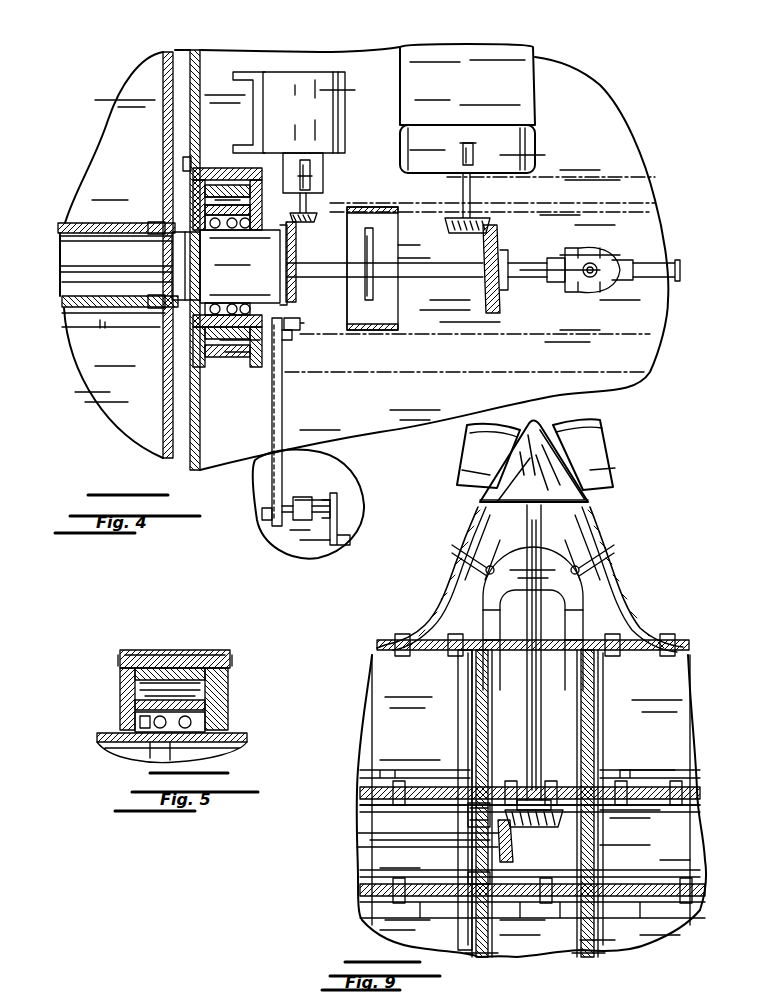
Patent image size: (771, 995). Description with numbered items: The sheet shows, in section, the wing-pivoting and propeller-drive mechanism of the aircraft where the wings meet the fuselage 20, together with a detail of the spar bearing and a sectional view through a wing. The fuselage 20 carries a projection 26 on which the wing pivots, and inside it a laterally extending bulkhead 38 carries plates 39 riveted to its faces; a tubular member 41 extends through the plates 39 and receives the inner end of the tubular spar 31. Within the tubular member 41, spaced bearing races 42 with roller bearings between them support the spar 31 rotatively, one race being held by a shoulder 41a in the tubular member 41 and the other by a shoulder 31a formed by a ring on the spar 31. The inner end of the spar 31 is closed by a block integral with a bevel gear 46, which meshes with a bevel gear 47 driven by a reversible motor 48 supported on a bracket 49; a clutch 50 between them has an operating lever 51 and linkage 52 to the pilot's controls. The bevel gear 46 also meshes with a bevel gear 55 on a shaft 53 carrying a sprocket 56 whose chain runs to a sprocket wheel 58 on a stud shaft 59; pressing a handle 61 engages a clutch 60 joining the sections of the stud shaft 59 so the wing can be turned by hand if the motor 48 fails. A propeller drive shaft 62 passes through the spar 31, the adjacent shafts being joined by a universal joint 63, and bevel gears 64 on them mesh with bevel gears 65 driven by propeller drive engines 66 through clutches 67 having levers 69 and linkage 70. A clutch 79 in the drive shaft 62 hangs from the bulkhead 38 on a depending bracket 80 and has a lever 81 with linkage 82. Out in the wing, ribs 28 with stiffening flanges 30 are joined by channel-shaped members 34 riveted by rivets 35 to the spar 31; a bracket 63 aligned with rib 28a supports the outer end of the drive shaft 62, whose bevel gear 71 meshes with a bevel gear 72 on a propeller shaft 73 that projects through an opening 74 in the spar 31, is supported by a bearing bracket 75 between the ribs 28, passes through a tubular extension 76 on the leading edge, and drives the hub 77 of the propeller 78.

In FIG. 4, the fuselage 20 is at (200, 56).
In FIG. 4, the projection 26 is at (185, 160).
In FIG. 4, the wing rib 28 is at (165, 54).
In FIG. 9, the wing rib 28 is at (600, 728).
In FIG. 9, the wing rib 28a is at (465, 710).
In FIG. 9, the stiffening flange 30 is at (488, 738).
In FIG. 4, the tubular spar 31 is at (66, 301).
In FIG. 5, the tubular spar 31 is at (98, 735).
In FIG. 9, the tubular spar 31 is at (688, 855).
In FIG. 4, the shoulder 31a is at (205, 222).
In FIG. 5, the shoulder 31a is at (138, 726).
In FIG. 4, the channel-shaped member 34 is at (68, 228).
In FIG. 9, the channel-shaped member 34 is at (680, 792).
In FIG. 4, the rivet 35 is at (85, 325).
In FIG. 9, the rivet 35 is at (670, 786).
In FIG. 4, the bulkhead 38 is at (196, 172).
In FIG. 5, the bulkhead 38 is at (213, 656).
In FIG. 4, the plate 39 is at (258, 172).
In FIG. 5, the plate 39 is at (124, 656).
In FIG. 4, the tubular member 41 is at (250, 192).
In FIG. 5, the tubular member 41 is at (174, 672).
In FIG. 4, the shoulder 41a is at (203, 200).
In FIG. 5, the shoulder 41a is at (135, 700).
In FIG. 4, the bearing race 42 is at (222, 240).
In FIG. 5, the bearing race 42 is at (172, 746).
In FIG. 4, the bevel gear 46 is at (296, 226).
In FIG. 4, the bevel gear 47 is at (314, 216).
In FIG. 4, the reversible motor 48 is at (333, 100).
In FIG. 4, the bracket 49 is at (245, 76).
In FIG. 4, the clutch 50 is at (315, 150).
In FIG. 4, the operating lever 51 is at (312, 168).
In FIG. 4, the linkage 52 is at (312, 180).
In FIG. 4, the shaft 53 is at (284, 325).
In FIG. 4, the bevel gear 55 is at (288, 318).
In FIG. 4, the sprocket 56 is at (288, 337).
In FIG. 4, the sprocket wheel 58 is at (288, 496).
In FIG. 4, the stud shaft 59 is at (262, 518).
In FIG. 4, the clutch 60 is at (312, 502).
In FIG. 4, the handle 61 is at (340, 538).
In FIG. 4, the propeller drive shaft 62 is at (70, 262).
In FIG. 9, the propeller drive shaft 62 is at (420, 838).
In FIG. 4, the universal joint 63 is at (598, 252).
In FIG. 9, the universal joint 63 is at (466, 812).
In FIG. 4, the bevel gear 64 is at (502, 255).
In FIG. 4, the bevel gear 65 is at (484, 220).
In FIG. 4, the propeller drive engine 66 is at (477, 52).
In FIG. 4, the clutch 67 is at (522, 147).
In FIG. 4, the operating lever 69 is at (463, 155).
In FIG. 4, the linkage 70 is at (470, 146).
In FIG. 9, the bevel gear 71 is at (512, 842).
In FIG. 9, the bevel gear 72 is at (540, 842).
In FIG. 9, the propeller shaft 73 is at (532, 734).
In FIG. 9, the opening 74 is at (541, 798).
In FIG. 9, the bearing bracket 75 is at (578, 575).
In FIG. 9, the tubular extension 76 is at (585, 548).
In FIG. 9, the hub 77 is at (553, 458).
In FIG. 9, the propeller 78 is at (605, 475).
In FIG. 4, the clutch 79 is at (398, 305).
In FIG. 4, the depending bracket 80 is at (360, 212).
In FIG. 4, the operating lever 81 is at (364, 262).
In FIG. 4, the linkage 82 is at (374, 260).